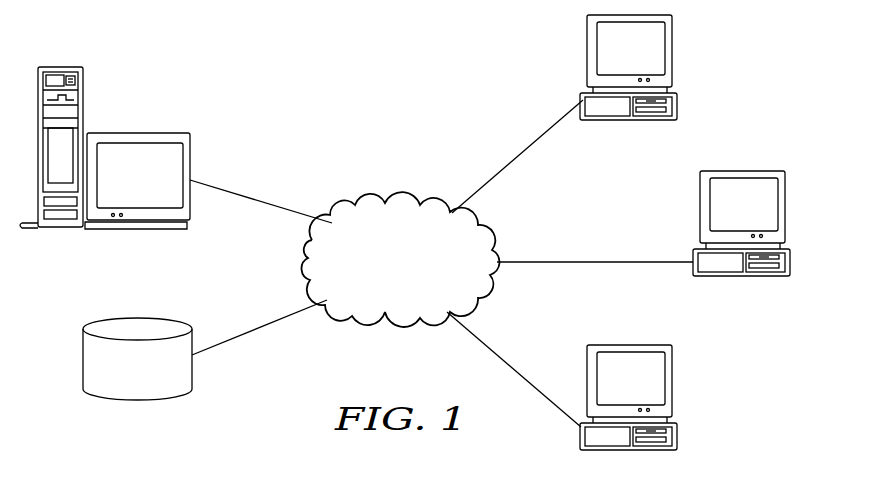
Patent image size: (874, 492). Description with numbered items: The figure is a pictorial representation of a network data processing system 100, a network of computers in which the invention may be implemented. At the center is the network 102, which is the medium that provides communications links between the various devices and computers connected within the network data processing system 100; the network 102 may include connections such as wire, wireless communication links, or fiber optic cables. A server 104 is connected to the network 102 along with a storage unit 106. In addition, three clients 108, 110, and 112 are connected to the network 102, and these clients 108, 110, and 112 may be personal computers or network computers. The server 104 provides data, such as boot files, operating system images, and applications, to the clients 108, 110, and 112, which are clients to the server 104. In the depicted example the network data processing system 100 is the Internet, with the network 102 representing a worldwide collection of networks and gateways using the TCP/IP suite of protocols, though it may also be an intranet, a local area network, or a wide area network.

The network data processing system 100 is at (280, 62).
The network 102 is at (383, 286).
The server 104 is at (83, 91).
The storage unit 106 is at (83, 365).
The client 108 is at (673, 60).
The client 110 is at (785, 212).
The client 112 is at (673, 385).